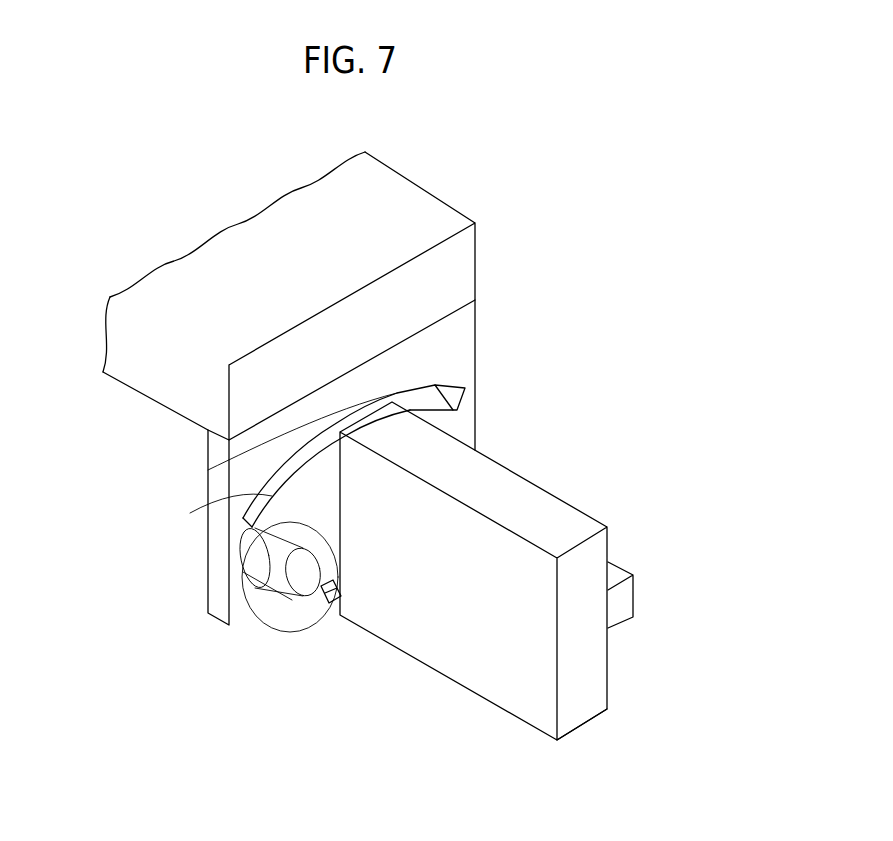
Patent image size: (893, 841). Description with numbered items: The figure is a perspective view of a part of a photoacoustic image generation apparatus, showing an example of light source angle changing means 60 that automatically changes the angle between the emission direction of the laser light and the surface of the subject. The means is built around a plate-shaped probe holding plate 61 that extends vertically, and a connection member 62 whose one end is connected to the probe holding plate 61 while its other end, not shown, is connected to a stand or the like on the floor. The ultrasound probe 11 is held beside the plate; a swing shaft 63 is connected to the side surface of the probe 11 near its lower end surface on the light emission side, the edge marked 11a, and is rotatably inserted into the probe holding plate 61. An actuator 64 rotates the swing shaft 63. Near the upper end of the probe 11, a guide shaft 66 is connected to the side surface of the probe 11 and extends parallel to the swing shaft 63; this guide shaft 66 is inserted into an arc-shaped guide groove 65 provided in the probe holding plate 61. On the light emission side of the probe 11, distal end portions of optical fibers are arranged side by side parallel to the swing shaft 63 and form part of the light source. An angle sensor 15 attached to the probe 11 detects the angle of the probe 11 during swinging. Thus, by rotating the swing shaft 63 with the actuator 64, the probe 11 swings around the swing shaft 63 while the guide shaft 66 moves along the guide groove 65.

The light source angle changing means 60 is at (346, 388).
The connection member 62 is at (477, 262).
The probe holding plate 61 is at (477, 366).
The guide shaft 66 is at (208, 470).
The guide groove 65 is at (210, 505).
The actuator 64 is at (241, 627).
The swing shaft 63 is at (323, 620).
The ultrasound probe 11 is at (543, 500).
The housing bottom edge 11a is at (583, 725).
The angle sensor 15 is at (637, 598).